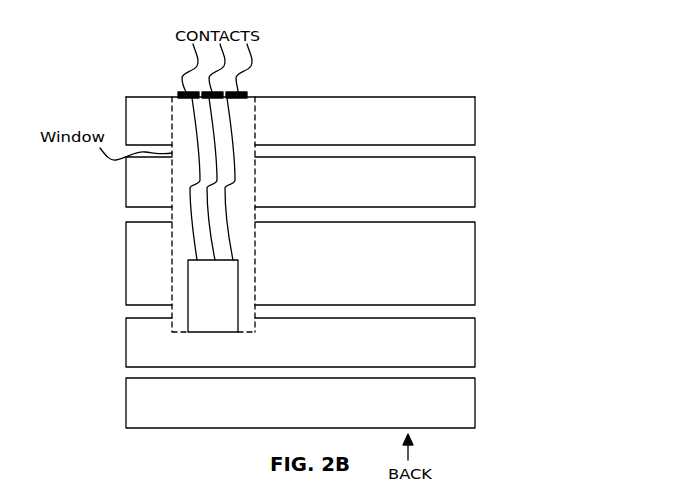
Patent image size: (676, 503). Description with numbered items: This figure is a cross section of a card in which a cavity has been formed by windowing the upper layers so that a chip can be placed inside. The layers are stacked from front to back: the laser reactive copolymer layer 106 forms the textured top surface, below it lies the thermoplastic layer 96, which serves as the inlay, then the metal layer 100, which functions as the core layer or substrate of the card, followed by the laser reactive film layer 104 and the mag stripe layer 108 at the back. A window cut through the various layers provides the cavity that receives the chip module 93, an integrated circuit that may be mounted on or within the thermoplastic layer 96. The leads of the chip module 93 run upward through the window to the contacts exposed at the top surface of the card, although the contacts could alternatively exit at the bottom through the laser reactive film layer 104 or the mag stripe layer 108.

The laser reactive copolymer layer 106 is at (475, 122).
The thermoplastic layer 96 is at (475, 180).
The metal layer 100 is at (475, 265).
The laser reactive film layer 104 is at (475, 345).
The mag stripe layer 108 is at (475, 400).
The chip module 93 is at (197, 303).